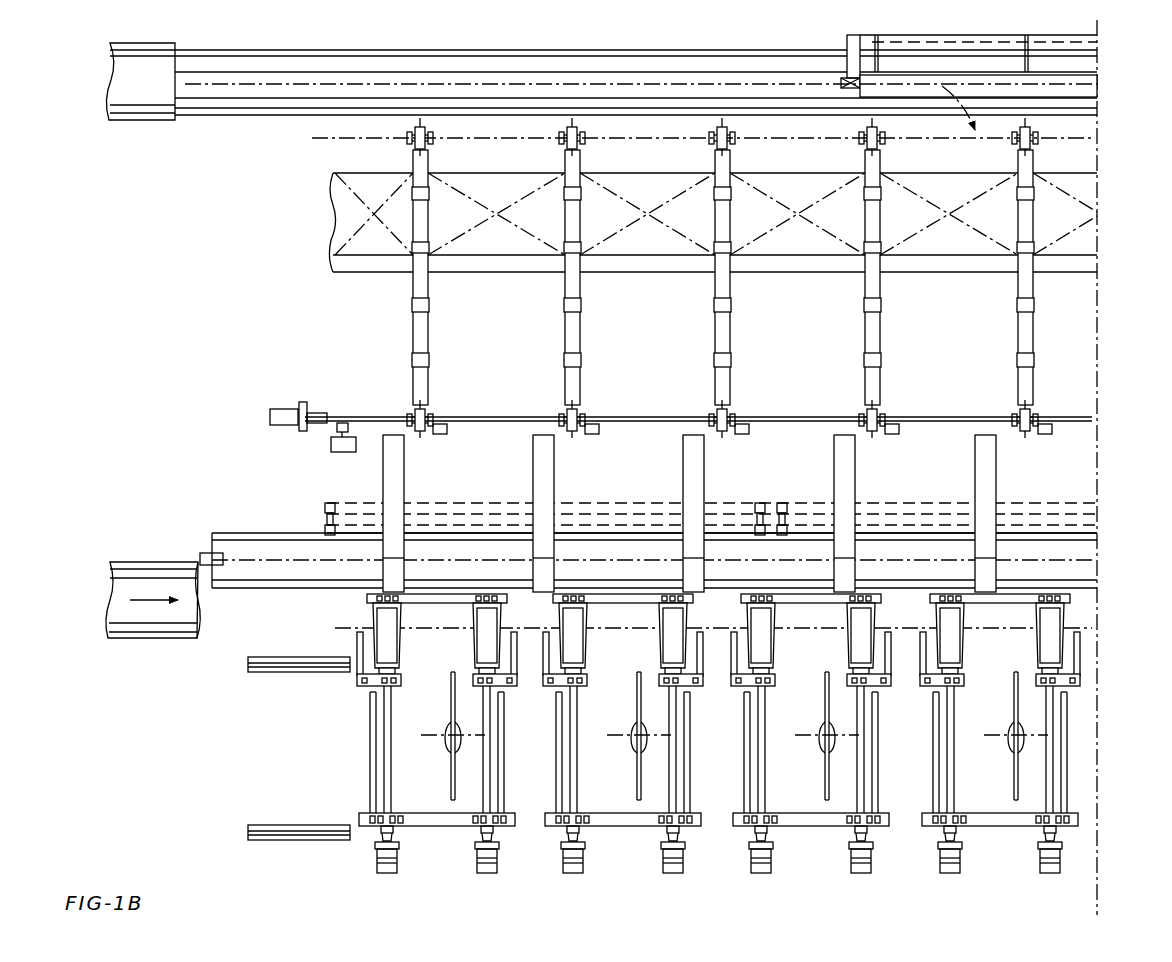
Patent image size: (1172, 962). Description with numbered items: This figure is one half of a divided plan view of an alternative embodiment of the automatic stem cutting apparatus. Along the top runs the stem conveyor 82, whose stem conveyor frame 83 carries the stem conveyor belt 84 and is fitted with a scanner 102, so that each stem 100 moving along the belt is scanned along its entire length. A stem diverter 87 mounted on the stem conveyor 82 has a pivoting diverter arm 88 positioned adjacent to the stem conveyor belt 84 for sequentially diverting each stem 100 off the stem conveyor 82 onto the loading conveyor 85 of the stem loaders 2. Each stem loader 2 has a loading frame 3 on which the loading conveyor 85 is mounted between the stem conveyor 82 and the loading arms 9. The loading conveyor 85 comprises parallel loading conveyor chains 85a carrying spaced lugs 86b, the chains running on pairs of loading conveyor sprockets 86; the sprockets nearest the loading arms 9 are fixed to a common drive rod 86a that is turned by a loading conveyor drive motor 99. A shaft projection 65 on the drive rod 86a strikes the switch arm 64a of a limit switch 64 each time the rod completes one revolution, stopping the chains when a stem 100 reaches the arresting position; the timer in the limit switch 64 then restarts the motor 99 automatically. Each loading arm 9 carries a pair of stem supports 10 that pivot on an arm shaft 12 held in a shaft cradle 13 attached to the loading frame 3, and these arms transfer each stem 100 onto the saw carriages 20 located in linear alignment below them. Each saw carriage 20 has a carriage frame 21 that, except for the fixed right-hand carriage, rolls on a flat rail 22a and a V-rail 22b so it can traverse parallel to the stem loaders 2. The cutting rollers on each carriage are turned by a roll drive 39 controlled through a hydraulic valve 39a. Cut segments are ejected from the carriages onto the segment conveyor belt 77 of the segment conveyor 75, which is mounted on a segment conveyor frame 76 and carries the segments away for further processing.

The stem loader 2 is at (290, 422).
The loading frame 3 is at (328, 184).
The loading arm 9 is at (1023, 472).
The stem support 10 is at (405, 481).
The arm shaft 12 is at (505, 512).
The shaft cradle 13 is at (331, 503).
The saw carriage 20 is at (514, 836).
The carriage frame 21 is at (505, 829).
The flat rail 22a is at (319, 673).
The V-rail 22b is at (319, 824).
The roll drive 39 is at (691, 868).
The hydraulic valve 39a is at (380, 872).
The limit switch 64 is at (328, 448).
The switch arm 64a is at (336, 427).
The shaft projection 65 is at (308, 402).
The segment conveyor 75 is at (595, 578).
The segment conveyor frame 76 is at (120, 567).
The segment conveyor belt 77 is at (281, 548).
The stem conveyor 82 is at (631, 89).
The stem conveyor frame 83 is at (636, 64).
The stem conveyor belt 84 is at (531, 72).
The loading conveyor 85 is at (717, 277).
The loading conveyor chain 85a is at (429, 340).
The loading conveyor sprocket 86 is at (698, 278).
The drive rod 86a is at (386, 416).
The lug 86b is at (581, 197).
The stem diverter 87 is at (845, 37).
The diverter arm 88 is at (877, 64).
The loading conveyor drive motor 99 is at (286, 406).
The stem 100 is at (1094, 88).
The scanner 102 is at (128, 125).